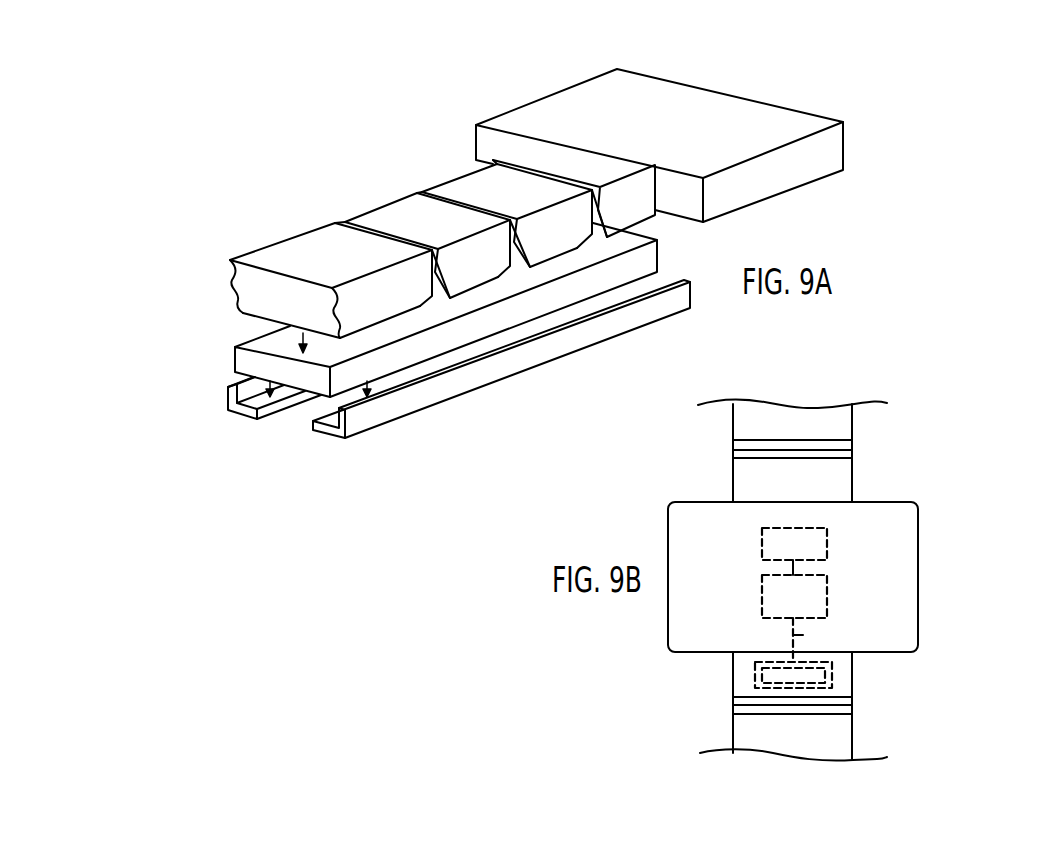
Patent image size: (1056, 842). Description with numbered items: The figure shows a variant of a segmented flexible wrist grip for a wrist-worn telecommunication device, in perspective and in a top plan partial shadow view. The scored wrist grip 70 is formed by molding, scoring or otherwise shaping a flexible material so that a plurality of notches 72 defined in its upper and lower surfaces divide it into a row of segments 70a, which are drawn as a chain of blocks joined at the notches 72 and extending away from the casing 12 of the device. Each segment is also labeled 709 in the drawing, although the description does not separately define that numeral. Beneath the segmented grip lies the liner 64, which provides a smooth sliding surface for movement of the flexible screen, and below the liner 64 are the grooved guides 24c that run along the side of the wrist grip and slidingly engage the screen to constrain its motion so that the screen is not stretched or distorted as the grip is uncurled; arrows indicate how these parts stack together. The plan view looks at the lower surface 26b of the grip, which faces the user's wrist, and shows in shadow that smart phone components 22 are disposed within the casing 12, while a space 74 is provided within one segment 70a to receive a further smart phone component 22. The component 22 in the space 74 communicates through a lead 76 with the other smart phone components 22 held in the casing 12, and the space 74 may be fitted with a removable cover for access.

In FIG. 9A, the casing 12 is at (710, 127).
In FIG. 9A, the scored wrist grip 70 is at (317, 243).
In FIG. 9A, the module body 709 is at (282, 256).
In FIG. 9A, the notches 72 is at (333, 222).
In FIG. 9B, the notches 72 is at (735, 705).
In FIG. 9A, the liner 64 is at (233, 362).
In FIG. 9A, the grooved guide 24c is at (237, 413).
In FIG. 9B, the lower surface 26b is at (920, 508).
In FIG. 9B, the smart phone components 22 is at (795, 543).
In FIG. 9B, the lead 76 is at (802, 635).
In FIG. 9B, the segment 70a is at (740, 675).
In FIG. 9B, the space 74 is at (830, 673).